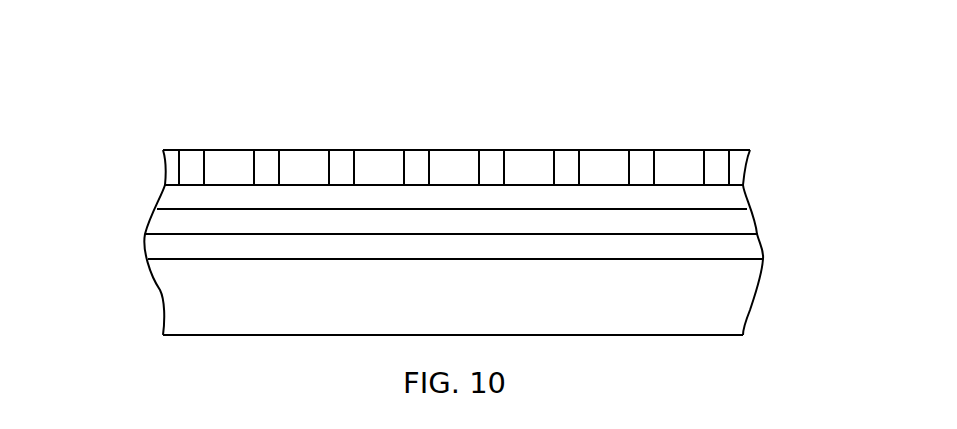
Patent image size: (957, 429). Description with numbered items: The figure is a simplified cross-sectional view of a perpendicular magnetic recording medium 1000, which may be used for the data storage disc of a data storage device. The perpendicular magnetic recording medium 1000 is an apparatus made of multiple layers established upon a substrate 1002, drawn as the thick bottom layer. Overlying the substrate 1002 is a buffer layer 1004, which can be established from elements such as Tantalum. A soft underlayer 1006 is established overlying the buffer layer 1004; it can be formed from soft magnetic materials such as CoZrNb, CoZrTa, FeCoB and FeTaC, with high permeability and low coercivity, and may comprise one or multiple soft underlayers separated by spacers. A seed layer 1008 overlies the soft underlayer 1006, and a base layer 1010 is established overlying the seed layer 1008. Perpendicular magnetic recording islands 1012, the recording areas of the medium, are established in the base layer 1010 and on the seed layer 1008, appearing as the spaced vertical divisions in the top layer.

The perpendicular magnetic recording medium 1000 is at (131, 120).
The substrate 1002 is at (158, 287).
The buffer layer 1004 is at (763, 253).
The soft underlayer 1006 is at (150, 223).
The seed layer 1008 is at (743, 195).
The base layer 1010 is at (165, 163).
The perpendicular magnetic recording islands 1012 is at (642, 150).